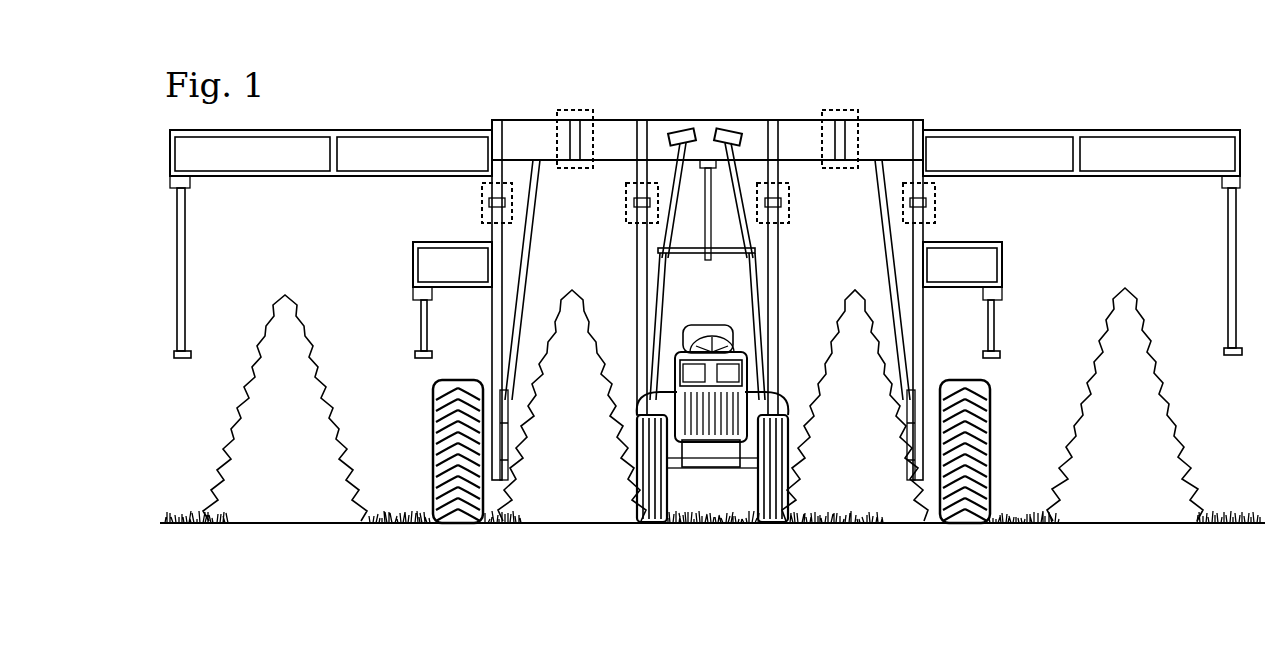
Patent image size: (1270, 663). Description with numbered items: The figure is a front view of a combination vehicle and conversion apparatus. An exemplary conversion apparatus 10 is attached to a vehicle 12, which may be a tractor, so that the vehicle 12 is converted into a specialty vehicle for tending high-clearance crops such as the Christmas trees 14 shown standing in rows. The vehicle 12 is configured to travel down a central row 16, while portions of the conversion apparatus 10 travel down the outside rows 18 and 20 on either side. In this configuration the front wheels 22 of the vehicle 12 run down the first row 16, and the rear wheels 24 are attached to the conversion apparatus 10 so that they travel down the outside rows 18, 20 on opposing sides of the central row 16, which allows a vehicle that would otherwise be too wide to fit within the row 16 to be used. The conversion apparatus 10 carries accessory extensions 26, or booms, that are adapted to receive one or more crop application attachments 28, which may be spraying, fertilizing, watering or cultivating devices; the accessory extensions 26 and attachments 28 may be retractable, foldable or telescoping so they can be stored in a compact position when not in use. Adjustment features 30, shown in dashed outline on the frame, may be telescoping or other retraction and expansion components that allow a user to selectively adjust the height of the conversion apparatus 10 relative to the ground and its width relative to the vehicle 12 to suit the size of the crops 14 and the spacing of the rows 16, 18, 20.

The conversion apparatus 10 is at (916, 86).
The vehicle 12 is at (623, 296).
The Christmas trees 14 is at (300, 441).
The central row 16 is at (711, 529).
The outside row 18 is at (399, 530).
The outside row 20 is at (1019, 529).
The front wheels 22 is at (650, 526).
The rear wheels 24 is at (433, 440).
The accessory extensions 26 is at (295, 130).
The crop application attachments 28 is at (185, 258).
The adjustment features 30 is at (576, 110).